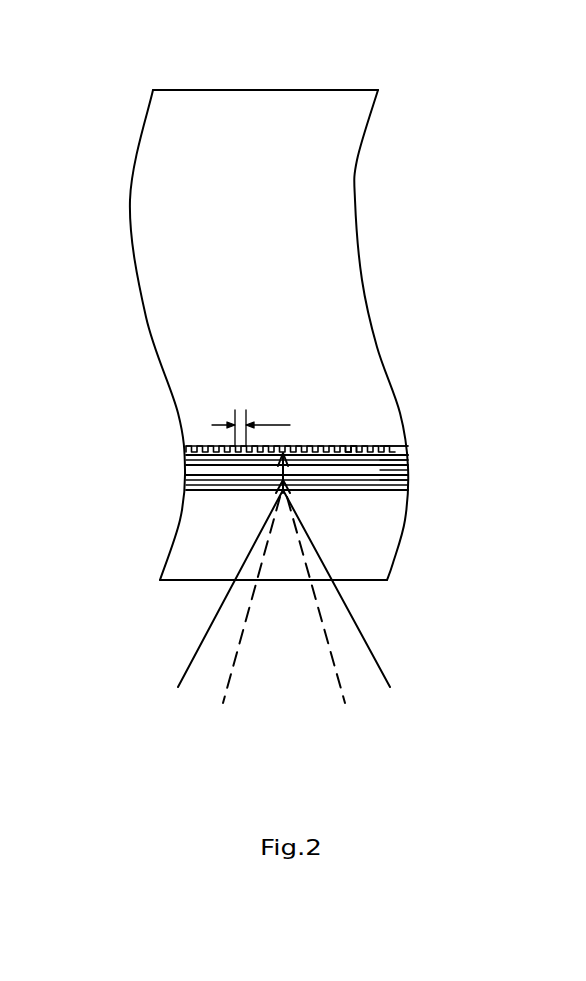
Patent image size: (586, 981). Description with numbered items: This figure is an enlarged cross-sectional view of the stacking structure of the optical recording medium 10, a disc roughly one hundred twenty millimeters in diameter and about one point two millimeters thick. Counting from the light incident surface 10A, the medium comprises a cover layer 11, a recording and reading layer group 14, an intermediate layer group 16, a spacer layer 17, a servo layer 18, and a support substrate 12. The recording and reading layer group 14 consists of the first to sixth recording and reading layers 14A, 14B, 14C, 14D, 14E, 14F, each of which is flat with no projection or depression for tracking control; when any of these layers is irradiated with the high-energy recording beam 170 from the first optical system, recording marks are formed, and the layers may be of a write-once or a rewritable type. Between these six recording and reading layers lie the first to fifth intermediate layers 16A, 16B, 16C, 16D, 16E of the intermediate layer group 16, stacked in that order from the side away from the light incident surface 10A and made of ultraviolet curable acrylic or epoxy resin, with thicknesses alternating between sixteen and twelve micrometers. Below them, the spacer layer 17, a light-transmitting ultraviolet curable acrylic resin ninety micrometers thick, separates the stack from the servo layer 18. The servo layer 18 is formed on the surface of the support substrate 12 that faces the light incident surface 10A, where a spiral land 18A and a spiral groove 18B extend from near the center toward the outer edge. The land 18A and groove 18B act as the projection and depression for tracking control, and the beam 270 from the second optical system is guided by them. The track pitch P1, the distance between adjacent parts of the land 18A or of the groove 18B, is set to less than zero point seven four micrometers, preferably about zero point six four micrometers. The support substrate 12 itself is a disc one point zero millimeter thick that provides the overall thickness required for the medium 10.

The optical recording medium 10 is at (255, 82).
The light incident surface 10A is at (345, 583).
The cover layer 11 is at (362, 555).
The support substrate 12 is at (318, 210).
The recording and reading layer group 14 is at (498, 402).
The first recording and reading layer 14A is at (403, 447).
The second recording and reading layer 14B is at (409, 448).
The third recording and reading layer 14C is at (409, 462).
The fourth recording and reading layer 14D is at (409, 470).
The fifth recording and reading layer 14E is at (403, 483).
The sixth recording and reading layer 14F is at (400, 488).
The intermediate layer group 16 is at (95, 418).
The first intermediate layer 16A is at (187, 450).
The second intermediate layer 16B is at (186, 458).
The third intermediate layer 16C is at (186, 477).
The fourth intermediate layer 16D is at (186, 485).
The fifth intermediate layer 16E is at (186, 492).
The spacer layer 17 is at (198, 458).
The servo layer 18 is at (505, 318).
The land 18A is at (353, 447).
The groove 18B is at (347, 447).
The track pitch P1 is at (251, 422).
The recording beam 170 is at (385, 673).
The beam 270 is at (321, 613).